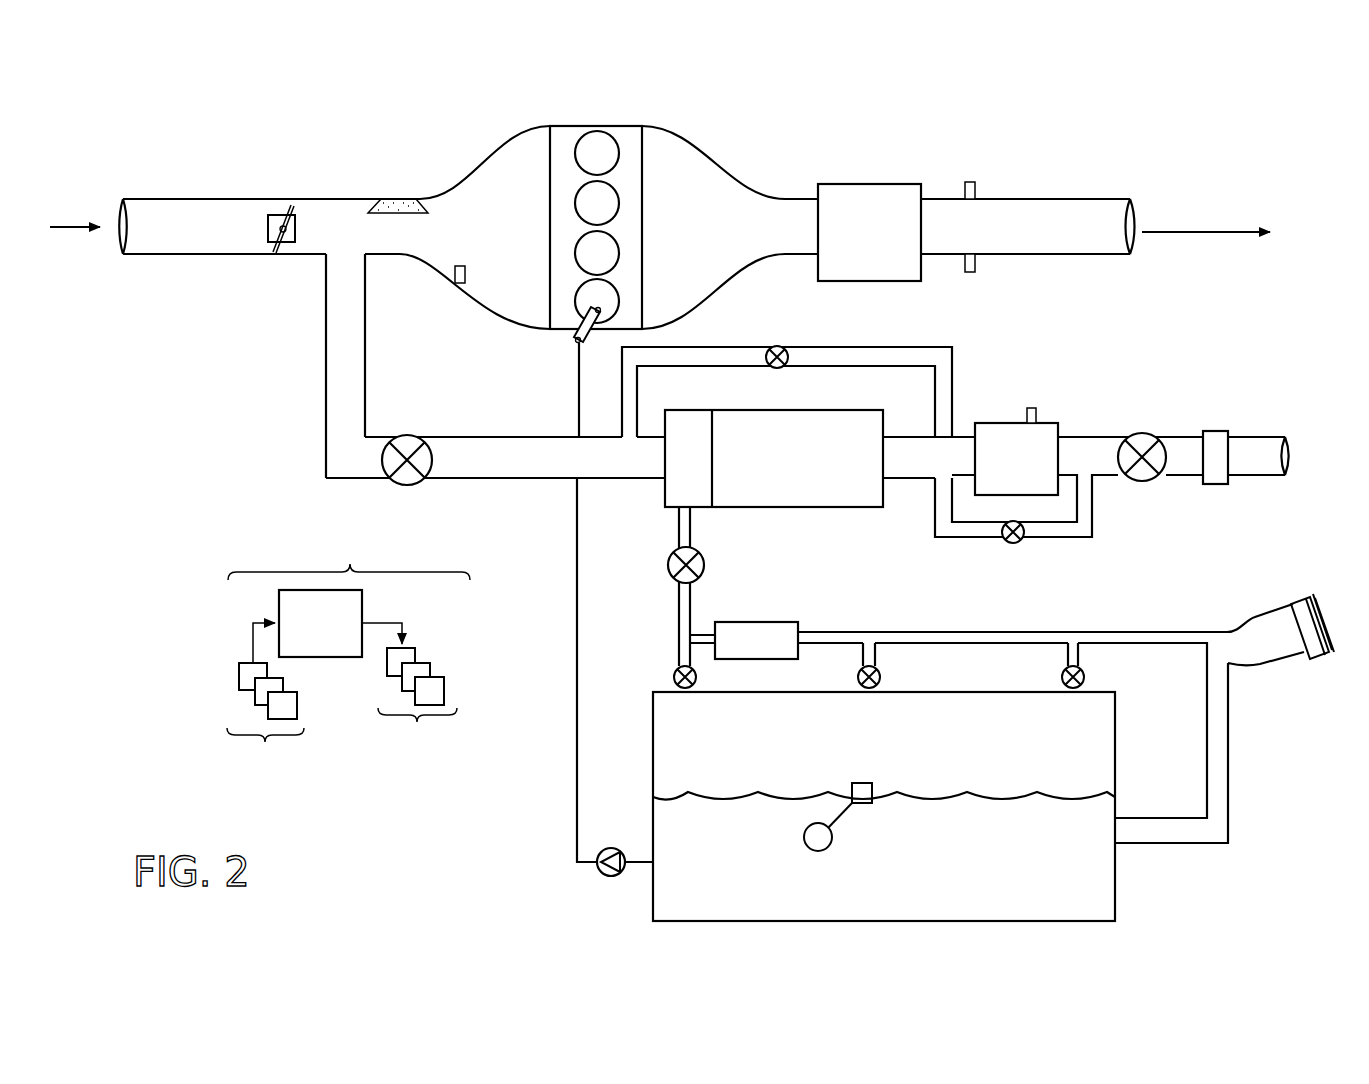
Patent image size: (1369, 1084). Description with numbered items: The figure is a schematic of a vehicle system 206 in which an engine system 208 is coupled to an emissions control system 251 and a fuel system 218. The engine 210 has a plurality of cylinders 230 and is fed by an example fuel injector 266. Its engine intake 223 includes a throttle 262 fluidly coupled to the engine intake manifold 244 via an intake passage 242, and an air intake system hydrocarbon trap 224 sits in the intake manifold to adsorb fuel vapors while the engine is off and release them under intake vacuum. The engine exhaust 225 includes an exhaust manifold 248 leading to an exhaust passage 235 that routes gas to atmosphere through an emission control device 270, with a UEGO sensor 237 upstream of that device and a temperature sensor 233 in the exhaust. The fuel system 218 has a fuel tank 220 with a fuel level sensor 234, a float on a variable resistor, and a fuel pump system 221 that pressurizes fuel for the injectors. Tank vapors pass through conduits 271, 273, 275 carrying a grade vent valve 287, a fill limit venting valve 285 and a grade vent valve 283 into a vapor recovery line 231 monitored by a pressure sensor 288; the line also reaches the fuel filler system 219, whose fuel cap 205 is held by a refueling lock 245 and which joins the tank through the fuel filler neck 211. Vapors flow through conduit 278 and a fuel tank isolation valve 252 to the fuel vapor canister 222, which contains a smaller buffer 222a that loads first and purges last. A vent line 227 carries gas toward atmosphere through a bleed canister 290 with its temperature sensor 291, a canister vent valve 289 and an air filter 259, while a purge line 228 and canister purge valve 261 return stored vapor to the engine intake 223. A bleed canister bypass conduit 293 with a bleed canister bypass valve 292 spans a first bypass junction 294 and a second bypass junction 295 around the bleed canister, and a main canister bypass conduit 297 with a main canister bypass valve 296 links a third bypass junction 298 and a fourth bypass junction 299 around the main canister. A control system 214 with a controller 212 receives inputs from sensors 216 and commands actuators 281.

The vehicle system 206 is at (138, 150).
The engine intake 223 is at (480, 155).
The air intake system hydrocarbon trap 224 is at (398, 200).
The engine system 208 is at (700, 146).
The engine exhaust 225 is at (758, 173).
The cylinders 230 is at (612, 142).
The emission control device 270 is at (858, 184).
The universal exhaust gas oxygen sensor 237 is at (965, 192).
The exhaust passage 235 is at (1090, 199).
The throttle 262 is at (295, 233).
The intake passage 242 is at (318, 257).
The fuel level sensor 234 is at (455, 278).
The engine 210 is at (642, 210).
The engine intake manifold 244 is at (517, 236).
The exhaust manifold 248 is at (729, 236).
The temperature sensor 233 is at (965, 264).
The fuel injector 266 is at (590, 335).
The fourth bypass junction 299 is at (617, 430).
The main canister bypass valve 296 is at (782, 347).
The main canister bypass conduit 297 is at (858, 348).
The buffer 222a is at (688, 410).
The fuel vapor canister 222 is at (883, 432).
The third bypass junction 298 is at (960, 430).
The temperature sensor 291 is at (1027, 415).
The emissions control system 251 is at (1272, 370).
The canister vent valve 289 is at (1150, 434).
The air filter 259 is at (1222, 431).
The canister purge valve 261 is at (407, 435).
The purge line 228 is at (525, 468).
The vent line 227 is at (928, 467).
The bleed canister 290 is at (1034, 470).
The second bypass junction 295 is at (935, 484).
The bleed canister bypass valve 292 is at (1020, 542).
The first bypass junction 294 is at (1100, 484).
The bleed canister bypass conduit 293 is at (1092, 540).
The conduit 278 is at (679, 540).
The fuel tank isolation valve 252 is at (679, 585).
The pressure sensor 288 is at (798, 625).
The grade vent valve 287 is at (673, 676).
The conduit 271 is at (690, 668).
The conduit 273 is at (863, 666).
The fill limit venting valve 285 is at (880, 677).
The conduit 275 is at (1067, 666).
The grade vent valve 283 is at (1084, 677).
The vapor recovery line 231 is at (1130, 630).
The fuel cap 205 is at (1308, 595).
The fuel filler system 219 is at (1280, 592).
The fuel filler neck 211 is at (1228, 740).
The refueling lock 245 is at (1308, 655).
The fuel tank 220 is at (1115, 788).
The fuel pump system 221 is at (612, 848).
The fuel system 218 is at (1163, 880).
The control system 214 is at (349, 550).
The controller 212 is at (320, 623).
The sensors 216 is at (265, 704).
The actuators 281 is at (409, 694).